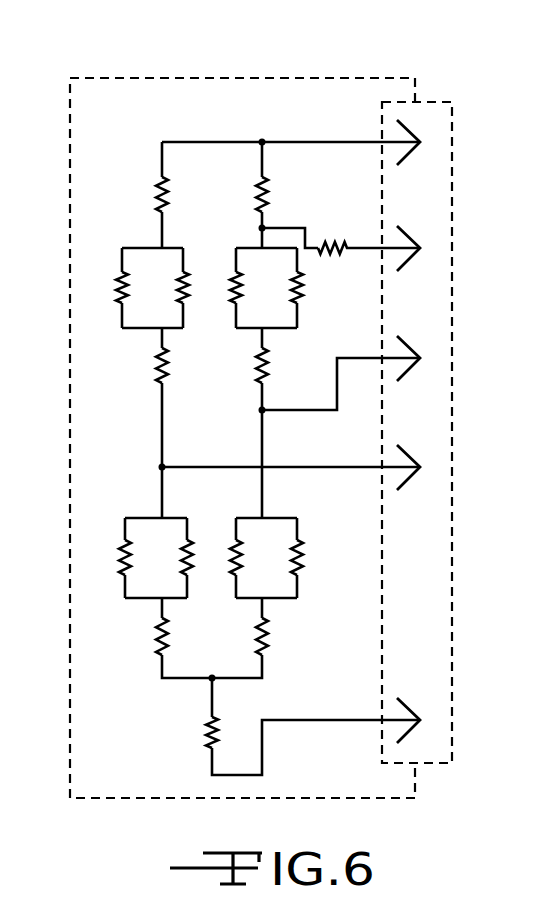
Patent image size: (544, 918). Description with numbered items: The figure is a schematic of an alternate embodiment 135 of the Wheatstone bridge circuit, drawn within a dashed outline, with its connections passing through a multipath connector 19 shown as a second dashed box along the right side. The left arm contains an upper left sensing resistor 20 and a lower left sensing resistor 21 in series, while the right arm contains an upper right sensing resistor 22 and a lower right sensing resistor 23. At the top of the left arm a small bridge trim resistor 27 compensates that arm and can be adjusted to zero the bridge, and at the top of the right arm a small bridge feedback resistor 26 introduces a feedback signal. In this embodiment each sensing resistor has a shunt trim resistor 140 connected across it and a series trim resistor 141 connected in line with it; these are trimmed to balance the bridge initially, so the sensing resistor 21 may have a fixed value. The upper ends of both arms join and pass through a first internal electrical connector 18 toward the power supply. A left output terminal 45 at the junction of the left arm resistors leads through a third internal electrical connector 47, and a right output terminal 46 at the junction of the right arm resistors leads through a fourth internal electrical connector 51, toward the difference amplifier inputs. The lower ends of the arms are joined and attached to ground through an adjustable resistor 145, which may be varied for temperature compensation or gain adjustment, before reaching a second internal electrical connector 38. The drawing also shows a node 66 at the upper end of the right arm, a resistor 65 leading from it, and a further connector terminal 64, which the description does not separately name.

The alternate embodiment of the bridge circuit 135 is at (259, 78).
The multipath connector 19 is at (433, 102).
The bridge trim resistor 27 is at (156, 196).
The bridge feedback resistor 26 is at (256, 203).
The upper right sensing resistor 22 is at (232, 280).
The upper left sensing resistor 20 is at (118, 284).
The lower left sensing resistor 21 is at (120, 552).
The lower right sensing resistor 23 is at (232, 550).
The shunt trim resistor 140 is at (186, 300).
The series trim resistor 141 is at (256, 368).
The adjustable resistor 145 is at (206, 740).
The node 66 is at (266, 228).
The resistor 65 is at (336, 244).
The right output terminal 46 is at (266, 408).
The left output terminal 45 is at (166, 465).
The first internal electrical connector 18 is at (408, 152).
The connector terminal 64 is at (410, 236).
The fourth internal electrical connector 51 is at (406, 343).
The third internal electrical connector 47 is at (406, 452).
The second internal electrical connector 38 is at (411, 706).